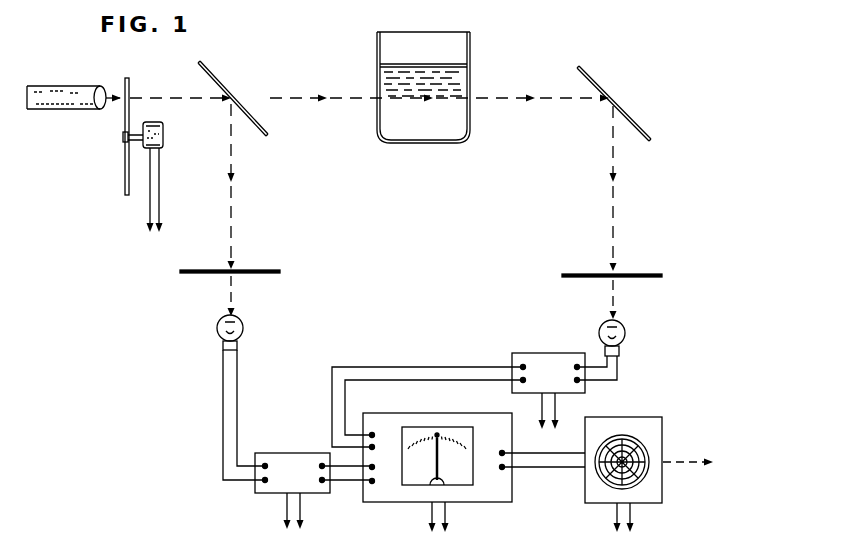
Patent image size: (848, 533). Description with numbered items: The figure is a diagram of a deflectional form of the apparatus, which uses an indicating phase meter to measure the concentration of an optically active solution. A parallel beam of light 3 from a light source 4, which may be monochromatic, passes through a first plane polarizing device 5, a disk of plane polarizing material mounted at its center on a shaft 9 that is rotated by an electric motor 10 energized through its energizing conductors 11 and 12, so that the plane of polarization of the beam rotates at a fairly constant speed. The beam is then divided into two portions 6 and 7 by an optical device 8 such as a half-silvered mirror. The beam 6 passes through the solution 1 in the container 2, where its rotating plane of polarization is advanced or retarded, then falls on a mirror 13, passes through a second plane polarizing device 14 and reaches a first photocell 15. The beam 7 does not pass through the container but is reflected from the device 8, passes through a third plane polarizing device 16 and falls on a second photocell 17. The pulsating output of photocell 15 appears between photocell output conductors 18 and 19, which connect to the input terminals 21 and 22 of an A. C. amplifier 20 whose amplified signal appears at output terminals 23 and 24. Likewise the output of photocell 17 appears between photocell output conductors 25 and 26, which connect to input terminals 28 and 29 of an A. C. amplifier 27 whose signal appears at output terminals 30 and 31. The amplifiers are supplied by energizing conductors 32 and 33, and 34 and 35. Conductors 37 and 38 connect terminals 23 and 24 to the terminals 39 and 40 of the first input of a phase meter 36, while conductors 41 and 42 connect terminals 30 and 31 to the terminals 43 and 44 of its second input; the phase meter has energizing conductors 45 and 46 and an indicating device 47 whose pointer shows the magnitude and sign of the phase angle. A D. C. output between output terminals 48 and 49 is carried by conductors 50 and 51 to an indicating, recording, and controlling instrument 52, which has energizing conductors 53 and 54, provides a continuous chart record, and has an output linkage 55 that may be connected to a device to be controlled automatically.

The solution 1 is at (445, 124).
The container 2 is at (470, 46).
The parallel beam of light 3 is at (190, 96).
The light source 4 is at (68, 86).
The first plane polarizing device 5 is at (129, 84).
The beam portion 6 is at (317, 98).
The beam portion 7 is at (233, 220).
The optical device 8 is at (213, 74).
The shaft 9 is at (132, 133).
The electric motor 10 is at (165, 135).
The energizing conductor 11 is at (150, 217).
The energizing conductor 12 is at (160, 217).
The mirror 13 is at (598, 79).
The second plane polarizing device 14 is at (636, 274).
The first photoelectric device or photocell 15 is at (626, 330).
The third plane polarizing device 16 is at (249, 270).
The second photoelectric device or photocell 17 is at (244, 328).
The photocell output conductor 18 is at (605, 365).
The photocell output conductor 19 is at (619, 360).
The A. C. amplifier 20 is at (540, 353).
The amplifier input terminal 21 is at (577, 365).
The amplifier input terminal 22 is at (580, 382).
The amplifier output terminal 23 is at (520, 365).
The amplifier output terminal 24 is at (521, 382).
The photocell output conductor 25 is at (222, 392).
The photocell output conductor 26 is at (238, 392).
The A. C. amplifier 27 is at (290, 453).
The amplifier input terminal 28 is at (262, 486).
The amplifier input terminal 29 is at (265, 464).
The amplifier output terminal 30 is at (322, 464).
The amplifier output terminal 31 is at (324, 483).
The energizing conductor 32 is at (542, 410).
The energizing conductor 33 is at (556, 410).
The energizing conductor 34 is at (287, 510).
The energizing conductor 35 is at (303, 509).
The phase meter 36 is at (422, 413).
The conductor 37 is at (397, 367).
The conductor 38 is at (401, 380).
The phase meter input terminal 39 is at (373, 435).
The phase meter input terminal 40 is at (374, 447).
The conductor 41 is at (363, 466).
The conductor 42 is at (347, 480).
The phase meter input terminal 43 is at (374, 467).
The phase meter input terminal 44 is at (374, 481).
The energizing conductor 45 is at (432, 515).
The energizing conductor 46 is at (446, 515).
The indicating device 47 is at (458, 427).
The phase meter output terminal 48 is at (502, 452).
The phase meter output terminal 49 is at (502, 467).
The conductor 50 is at (556, 453).
The conductor 51 is at (554, 470).
The indicating, recording, and controlling instrument 52 is at (626, 417).
The energizing conductor 53 is at (617, 516).
The energizing conductor 54 is at (631, 516).
The output linkage 55 is at (678, 462).